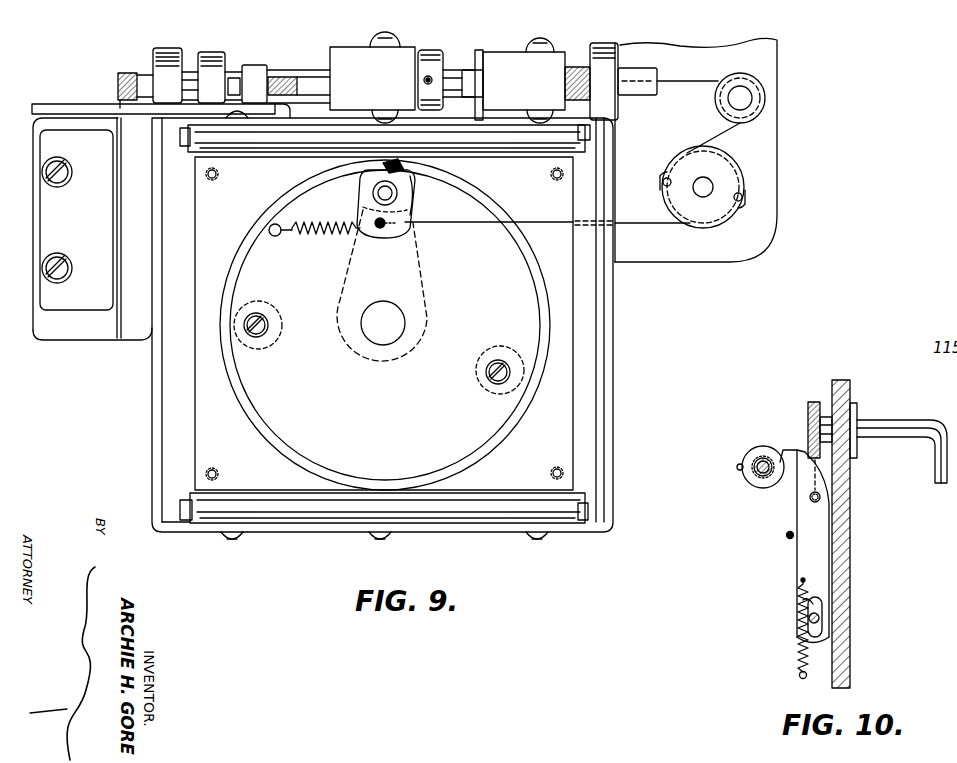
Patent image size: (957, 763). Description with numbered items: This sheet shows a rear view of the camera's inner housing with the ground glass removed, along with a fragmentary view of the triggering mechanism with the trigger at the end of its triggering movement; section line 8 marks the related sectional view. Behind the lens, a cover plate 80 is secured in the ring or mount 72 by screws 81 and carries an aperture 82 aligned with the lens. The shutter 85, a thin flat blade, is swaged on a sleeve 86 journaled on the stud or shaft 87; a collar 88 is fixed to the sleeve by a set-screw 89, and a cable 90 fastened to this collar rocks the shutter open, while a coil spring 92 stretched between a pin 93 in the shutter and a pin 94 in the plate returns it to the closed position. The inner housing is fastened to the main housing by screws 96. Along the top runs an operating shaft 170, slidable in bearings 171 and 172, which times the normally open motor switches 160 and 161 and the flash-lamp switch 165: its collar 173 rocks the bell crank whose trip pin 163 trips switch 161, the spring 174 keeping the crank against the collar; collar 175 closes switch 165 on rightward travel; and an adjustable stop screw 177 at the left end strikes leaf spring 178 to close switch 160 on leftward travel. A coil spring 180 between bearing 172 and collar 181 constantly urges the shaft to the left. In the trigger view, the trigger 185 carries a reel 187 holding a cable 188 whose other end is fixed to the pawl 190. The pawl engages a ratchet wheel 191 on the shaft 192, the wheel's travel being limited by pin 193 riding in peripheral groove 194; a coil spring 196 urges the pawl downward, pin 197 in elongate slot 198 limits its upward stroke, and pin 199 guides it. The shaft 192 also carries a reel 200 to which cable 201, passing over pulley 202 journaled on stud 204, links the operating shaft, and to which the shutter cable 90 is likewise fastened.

In FIG. 9, the section line 8- 8 is at (358, 17).
In FIG. 9, the ring or mount 72 is at (470, 465).
In FIG. 9, the cover plate 80 is at (303, 437).
In FIG. 9, the screws 81 is at (271, 323).
In FIG. 9, the aperture 82 is at (392, 330).
In FIG. 9, the shutter 85 is at (428, 277).
In FIG. 9, the sleeve 86 is at (395, 198).
In FIG. 9, the stud or shaft 87 is at (372, 191).
In FIG. 9, the collar 88 is at (411, 198).
In FIG. 9, the set-screw 89 is at (403, 172).
In FIG. 9, the cable 90 is at (502, 223).
In FIG. 9, the coil spring 92 is at (328, 225).
In FIG. 9, the pin 93 is at (374, 232).
In FIG. 9, the pin 94 is at (275, 225).
In FIG. 9, the screws 96 is at (552, 468).
In FIG. 9, the switch 160 is at (82, 292).
In FIG. 9, the switch 161 is at (352, 60).
In FIG. 9, the trip pin 163 is at (268, 78).
In FIG. 9, the switch 165 is at (517, 58).
In FIG. 9, the operating shaft 170 is at (303, 72).
In FIG. 9, the bearing 171 is at (172, 52).
In FIG. 9, the bearing 172 is at (610, 50).
In FIG. 9, the collar 173 is at (215, 55).
In FIG. 9, the spring 174 is at (285, 112).
In FIG. 9, the collar 175 is at (435, 57).
In FIG. 9, the adjustable stop screw 177 is at (130, 73).
In FIG. 9, the leaf spring 178 is at (119, 203).
In FIG. 9, the coil spring 180 is at (573, 65).
In FIG. 9, the collar 181 is at (487, 50).
In FIG. 9, the shaft 192 is at (697, 194).
In FIG. 10, the shaft 192 is at (757, 463).
In FIG. 9, the reel 200 is at (720, 173).
In FIG. 9, the cable 201 is at (688, 81).
In FIG. 9, the pulley 202 is at (718, 102).
In FIG. 9, the stud 204 is at (745, 97).
In FIG. 10, the trigger 185 is at (890, 432).
In FIG. 10, the reel 187 is at (810, 406).
In FIG. 10, the cable 188 is at (823, 490).
In FIG. 10, the pawl 190 is at (812, 557).
In FIG. 10, the ratchet wheel 191 is at (762, 487).
In FIG. 10, the pin 193 is at (737, 467).
In FIG. 10, the peripheral groove 194 is at (757, 461).
In FIG. 10, the coil spring 196 is at (801, 648).
In FIG. 10, the pin 197 is at (812, 604).
In FIG. 10, the elongate slot 198 is at (822, 601).
In FIG. 10, the pin 199 is at (789, 535).